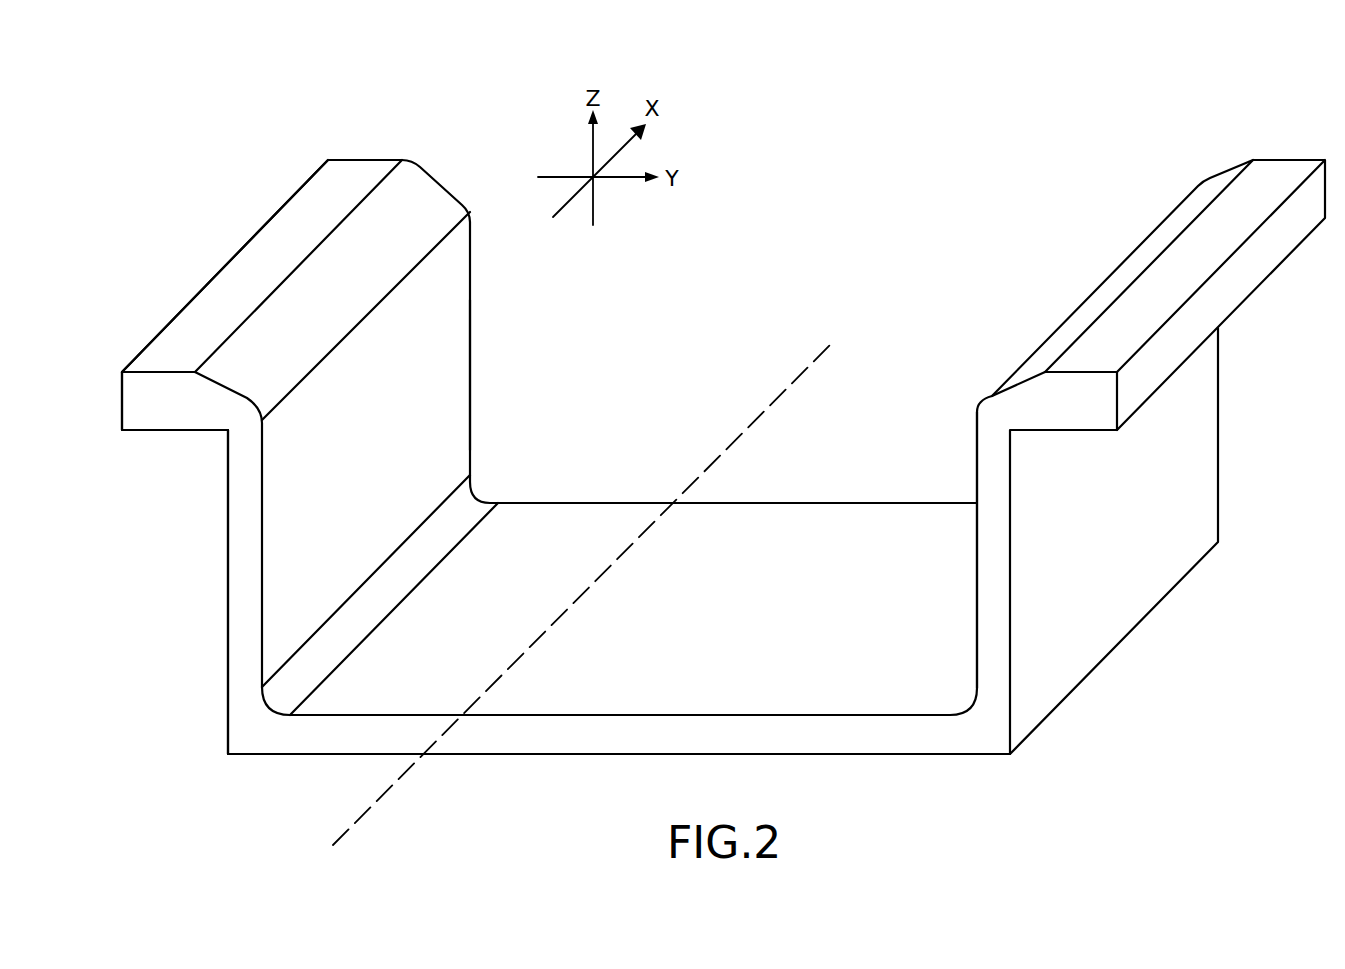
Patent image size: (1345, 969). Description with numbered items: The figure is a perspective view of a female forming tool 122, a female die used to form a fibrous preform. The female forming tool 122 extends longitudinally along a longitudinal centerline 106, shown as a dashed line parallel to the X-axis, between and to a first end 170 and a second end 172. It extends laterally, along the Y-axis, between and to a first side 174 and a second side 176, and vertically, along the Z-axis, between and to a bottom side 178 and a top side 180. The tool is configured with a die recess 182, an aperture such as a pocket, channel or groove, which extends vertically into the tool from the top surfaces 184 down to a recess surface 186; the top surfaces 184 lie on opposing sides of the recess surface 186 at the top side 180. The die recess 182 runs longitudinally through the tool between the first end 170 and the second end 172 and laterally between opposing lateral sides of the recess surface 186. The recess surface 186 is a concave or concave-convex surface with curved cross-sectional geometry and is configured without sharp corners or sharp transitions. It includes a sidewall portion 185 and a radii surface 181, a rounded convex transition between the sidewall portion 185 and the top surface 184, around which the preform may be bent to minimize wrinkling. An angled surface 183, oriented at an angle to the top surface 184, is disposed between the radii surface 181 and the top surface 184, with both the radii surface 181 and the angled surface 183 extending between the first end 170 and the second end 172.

The longitudinal centerline 106 is at (382, 795).
The female forming tool 122 is at (684, 442).
The first end 170 is at (240, 612).
The second end 172 is at (470, 318).
The first side 174 is at (121, 402).
The second side 176 is at (1232, 287).
The bottom side 178 is at (332, 755).
The top side 180 is at (268, 238).
The radii surface 181 is at (452, 208).
The die recess 182 is at (769, 266).
The angled surface 183 is at (420, 183).
The top surface 184 is at (350, 172).
The sidewall portion 185 is at (450, 374).
The recess surface 186 is at (689, 683).